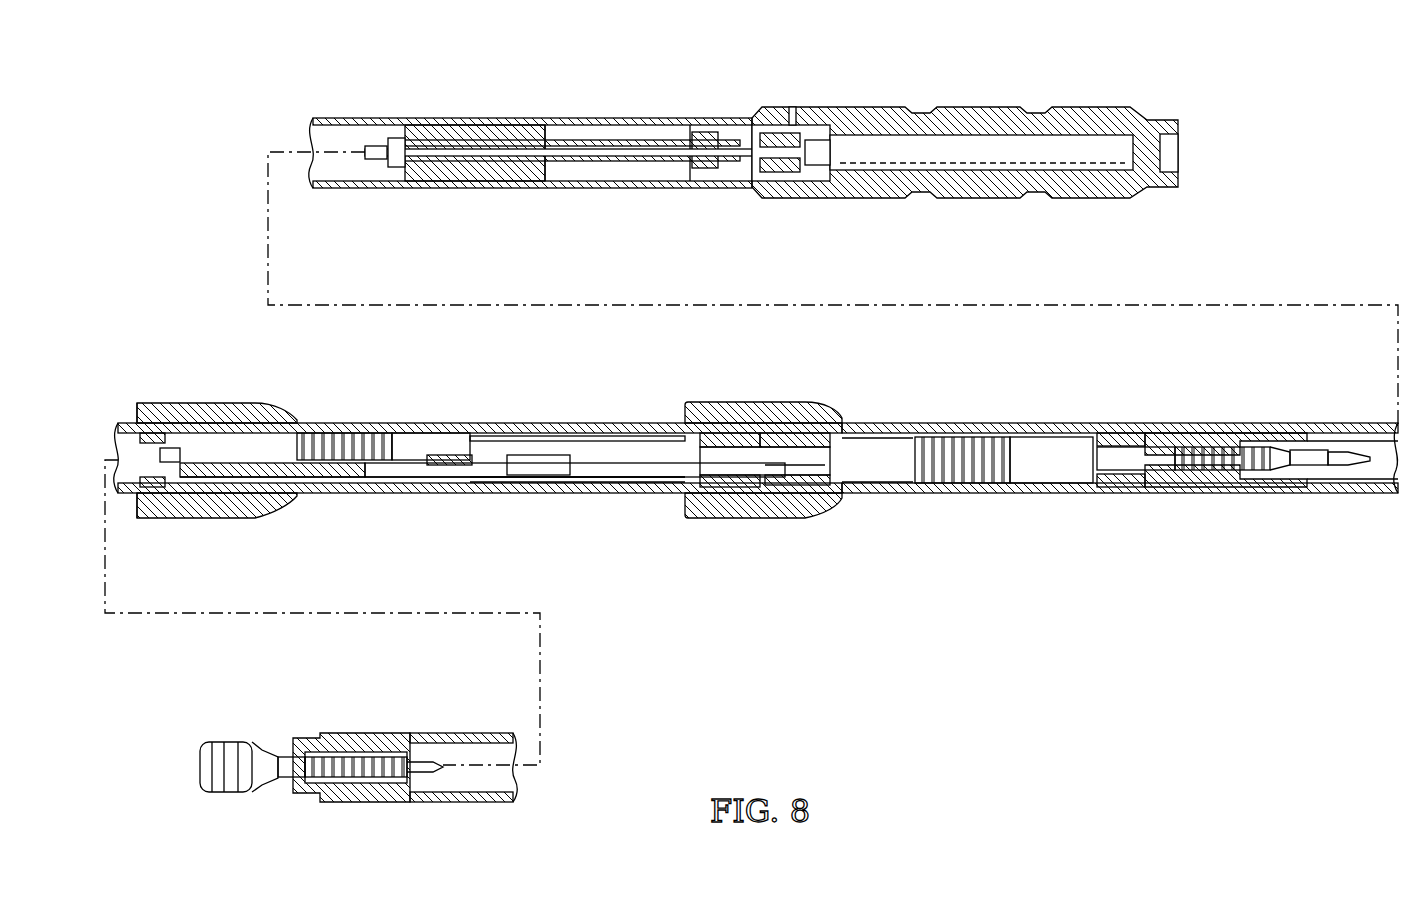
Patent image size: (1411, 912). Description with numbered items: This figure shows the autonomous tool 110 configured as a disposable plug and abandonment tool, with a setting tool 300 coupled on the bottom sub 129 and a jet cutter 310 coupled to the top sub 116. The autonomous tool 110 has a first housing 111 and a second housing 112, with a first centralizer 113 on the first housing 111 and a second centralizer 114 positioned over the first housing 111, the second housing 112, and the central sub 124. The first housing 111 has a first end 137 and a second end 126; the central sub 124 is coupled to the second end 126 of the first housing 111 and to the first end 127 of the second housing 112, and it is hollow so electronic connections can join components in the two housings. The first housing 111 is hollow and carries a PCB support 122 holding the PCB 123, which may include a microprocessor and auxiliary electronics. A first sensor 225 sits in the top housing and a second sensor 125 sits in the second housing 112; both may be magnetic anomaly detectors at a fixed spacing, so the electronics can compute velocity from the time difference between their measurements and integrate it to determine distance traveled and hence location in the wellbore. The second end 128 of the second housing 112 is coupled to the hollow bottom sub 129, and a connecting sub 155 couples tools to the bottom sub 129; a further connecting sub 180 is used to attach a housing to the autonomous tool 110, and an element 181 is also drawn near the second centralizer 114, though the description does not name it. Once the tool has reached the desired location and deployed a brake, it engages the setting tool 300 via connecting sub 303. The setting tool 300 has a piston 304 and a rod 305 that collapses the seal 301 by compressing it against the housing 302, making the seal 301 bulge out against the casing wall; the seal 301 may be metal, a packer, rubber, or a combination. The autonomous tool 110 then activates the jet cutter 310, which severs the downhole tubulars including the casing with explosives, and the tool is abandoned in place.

The setting tool 300 is at (585, 66).
The seal 301 is at (975, 107).
The housing 302 is at (672, 118).
The piston 304 is at (483, 118).
The rod 305 is at (638, 172).
The autonomous tool 110 is at (848, 368).
The first housing 111 is at (493, 493).
The second housing 112 is at (1037, 493).
The first centralizer 113 is at (248, 400).
The second centralizer 114 is at (720, 400).
The top sub 116 is at (178, 400).
The PCB support 122 is at (313, 493).
The PCB 123 is at (363, 493).
The central sub 124 is at (1127, 430).
The second sensor 125 is at (982, 430).
The second end of first housing 126 is at (738, 518).
The first end of second housing 127 is at (780, 518).
The second end of second housing 128 is at (1142, 493).
The bottom sub 129 is at (1178, 493).
The first end of first housing 137 is at (172, 518).
The connecting sub 155 is at (1230, 423).
The piston 181 is at (775, 433).
The first sensor 225 is at (353, 430).
The connecting sub 303 is at (1270, 493).
The jet cutter 310 is at (193, 750).
The connecting sub 180 is at (335, 733).